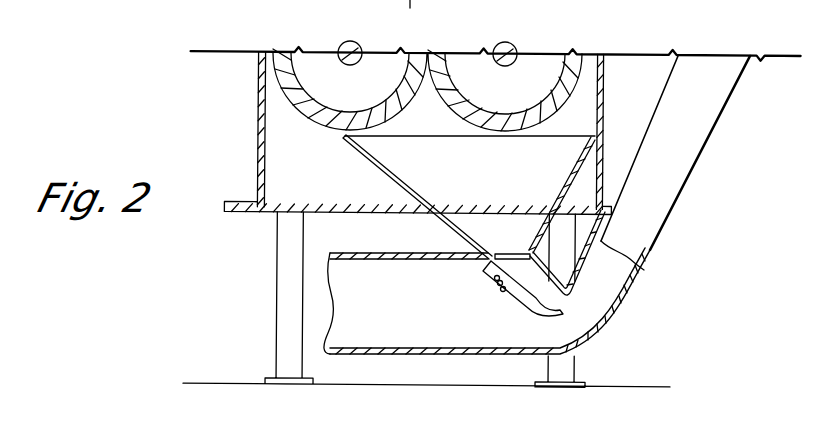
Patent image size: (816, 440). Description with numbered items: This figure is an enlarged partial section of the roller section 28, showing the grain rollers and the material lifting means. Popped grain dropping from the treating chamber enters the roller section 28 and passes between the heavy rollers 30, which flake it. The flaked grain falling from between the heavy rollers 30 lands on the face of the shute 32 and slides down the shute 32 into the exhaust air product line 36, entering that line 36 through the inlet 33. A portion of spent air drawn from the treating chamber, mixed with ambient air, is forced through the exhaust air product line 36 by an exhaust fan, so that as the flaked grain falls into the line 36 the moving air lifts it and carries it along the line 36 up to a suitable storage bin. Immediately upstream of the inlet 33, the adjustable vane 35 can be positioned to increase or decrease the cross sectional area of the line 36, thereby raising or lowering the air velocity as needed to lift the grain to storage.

The roller section 28 is at (257, 81).
The heavy rollers 30 is at (258, 114).
The shute 32 is at (372, 165).
The inlet 33 is at (493, 254).
The adjustable vane 35 is at (487, 276).
The exhaust air product line 36 is at (682, 164).